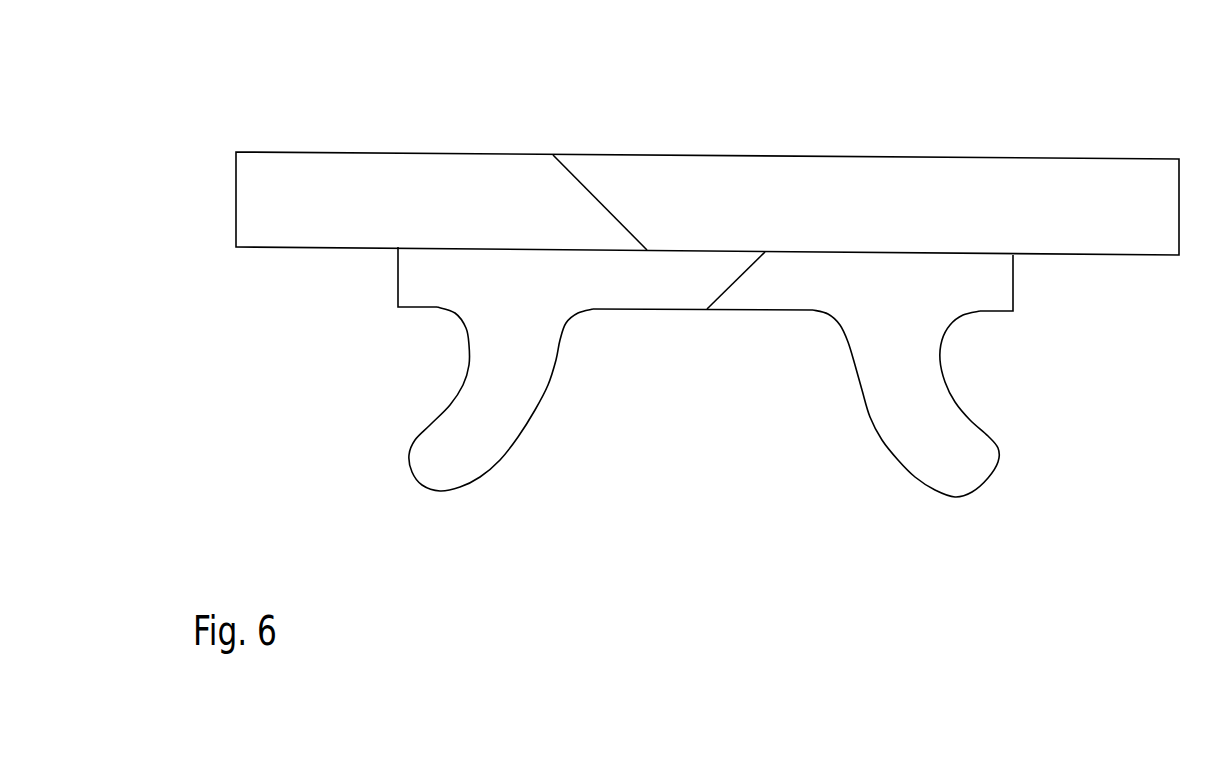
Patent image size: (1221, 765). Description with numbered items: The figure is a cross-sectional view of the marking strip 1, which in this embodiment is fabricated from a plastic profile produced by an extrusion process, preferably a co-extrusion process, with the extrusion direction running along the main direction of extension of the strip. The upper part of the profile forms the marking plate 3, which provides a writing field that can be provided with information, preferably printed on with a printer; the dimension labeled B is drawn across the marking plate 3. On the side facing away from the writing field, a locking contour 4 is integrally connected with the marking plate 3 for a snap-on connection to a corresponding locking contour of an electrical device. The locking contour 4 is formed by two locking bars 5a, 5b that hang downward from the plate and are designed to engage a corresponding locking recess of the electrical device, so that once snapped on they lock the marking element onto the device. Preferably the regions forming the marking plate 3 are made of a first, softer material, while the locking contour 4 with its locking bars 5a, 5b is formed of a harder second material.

The marking strip 1 is at (1049, 98).
The marking plate 3 is at (446, 196).
The width of plate section B is at (686, 156).
The locking contour 4 is at (765, 288).
The locking bar 5a is at (952, 462).
The locking bar 5b is at (450, 450).